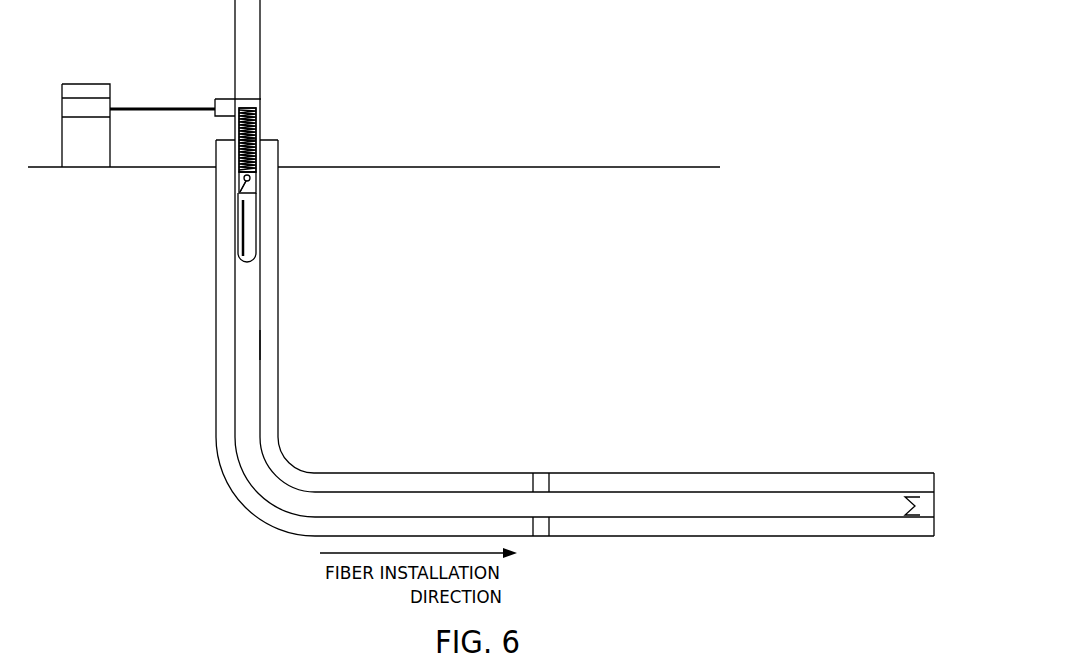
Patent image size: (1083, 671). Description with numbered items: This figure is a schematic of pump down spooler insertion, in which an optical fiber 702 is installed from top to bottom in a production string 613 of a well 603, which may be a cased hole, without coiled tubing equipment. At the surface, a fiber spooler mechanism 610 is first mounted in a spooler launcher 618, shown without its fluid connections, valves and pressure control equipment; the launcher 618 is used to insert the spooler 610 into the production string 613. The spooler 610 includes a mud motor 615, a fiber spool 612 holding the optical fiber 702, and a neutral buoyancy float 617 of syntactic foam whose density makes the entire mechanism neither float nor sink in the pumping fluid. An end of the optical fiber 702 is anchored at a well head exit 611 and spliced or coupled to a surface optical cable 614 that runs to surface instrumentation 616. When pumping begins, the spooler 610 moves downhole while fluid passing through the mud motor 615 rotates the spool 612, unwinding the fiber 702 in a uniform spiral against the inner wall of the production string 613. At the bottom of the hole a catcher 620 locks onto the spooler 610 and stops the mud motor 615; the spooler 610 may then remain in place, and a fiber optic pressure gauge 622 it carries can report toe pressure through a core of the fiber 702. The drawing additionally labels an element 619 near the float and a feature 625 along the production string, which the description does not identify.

The well 603 is at (279, 283).
The fiber spooler mechanism 610 is at (273, 96).
The well head exit 611 is at (228, 98).
The fiber spool 612 is at (258, 127).
The production string 613 is at (261, 343).
The surface optical cable 614 is at (150, 110).
The mud motor 615 is at (258, 178).
The surface instrumentation 616 is at (75, 112).
The neutral buoyancy float 617 is at (256, 226).
The spooler launcher 618 is at (261, 40).
The fiber inside capsule 619 is at (238, 242).
The catcher 620 is at (918, 497).
The fiber optic pressure gauge 622 is at (242, 193).
The coupling 625 is at (540, 537).
The optical fiber 702 is at (240, 147).